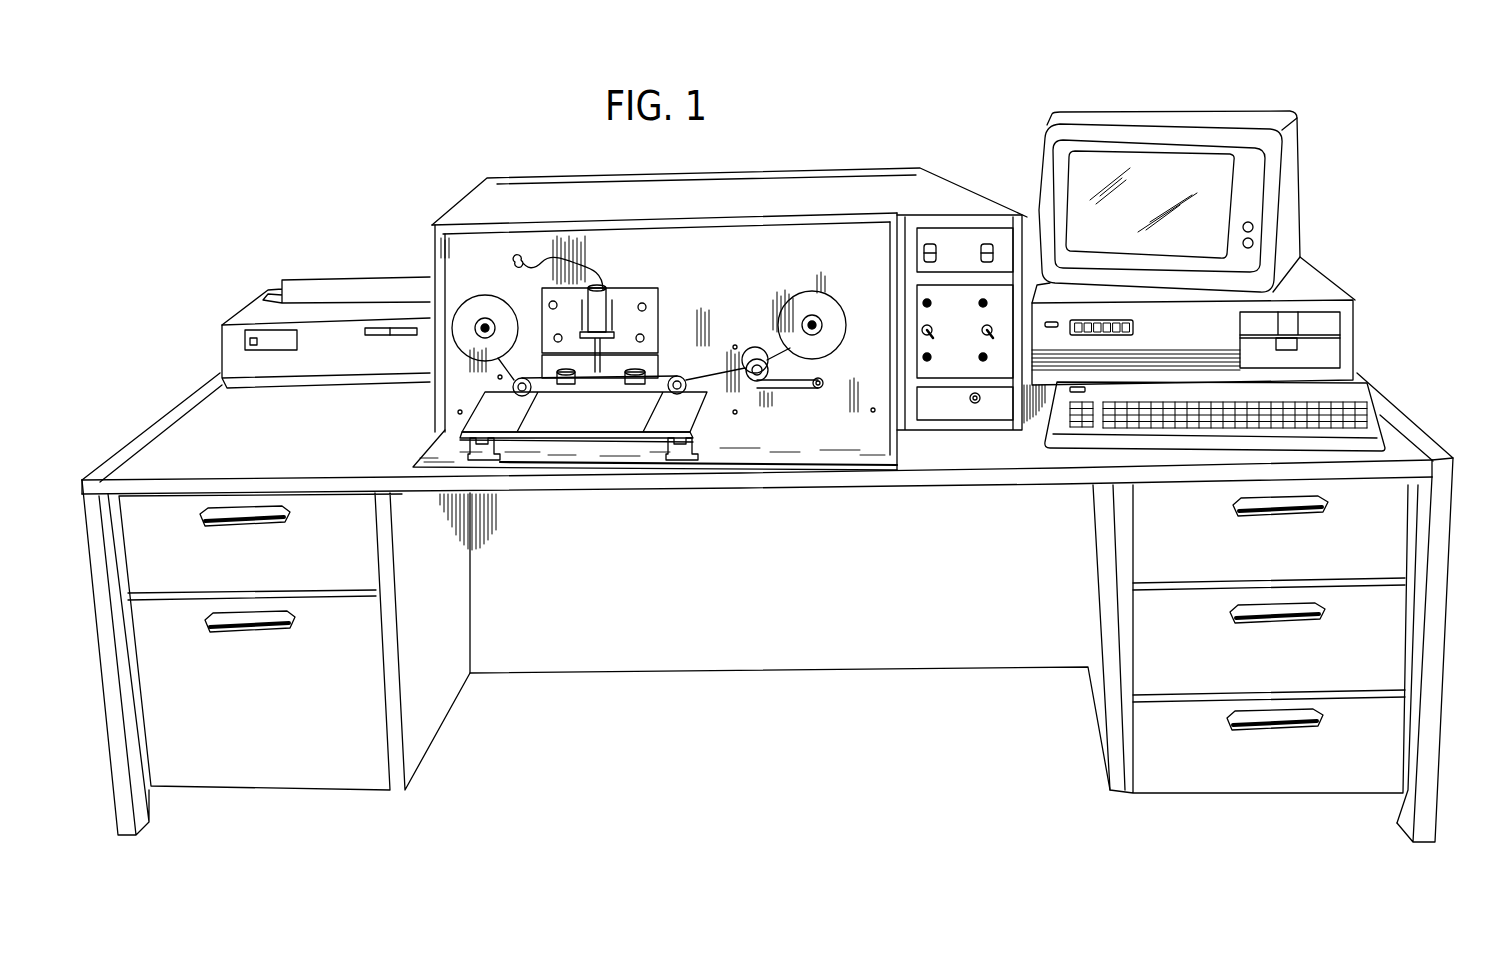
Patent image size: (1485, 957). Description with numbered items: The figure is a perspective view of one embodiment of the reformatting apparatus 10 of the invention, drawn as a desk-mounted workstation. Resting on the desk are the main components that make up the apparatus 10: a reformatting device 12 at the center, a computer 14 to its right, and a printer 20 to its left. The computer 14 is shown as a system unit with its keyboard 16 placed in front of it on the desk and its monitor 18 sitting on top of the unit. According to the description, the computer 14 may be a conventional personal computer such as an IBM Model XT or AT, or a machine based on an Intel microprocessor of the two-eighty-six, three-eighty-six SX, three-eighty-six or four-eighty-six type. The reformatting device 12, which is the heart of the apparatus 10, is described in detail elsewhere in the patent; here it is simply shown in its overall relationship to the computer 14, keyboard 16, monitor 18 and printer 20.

The apparatus 10 is at (424, 91).
The reformatting device 12 is at (467, 262).
The computer 14 is at (1317, 300).
The keyboard 16 is at (1368, 393).
The monitor 18 is at (1047, 158).
The printer 20 is at (264, 320).